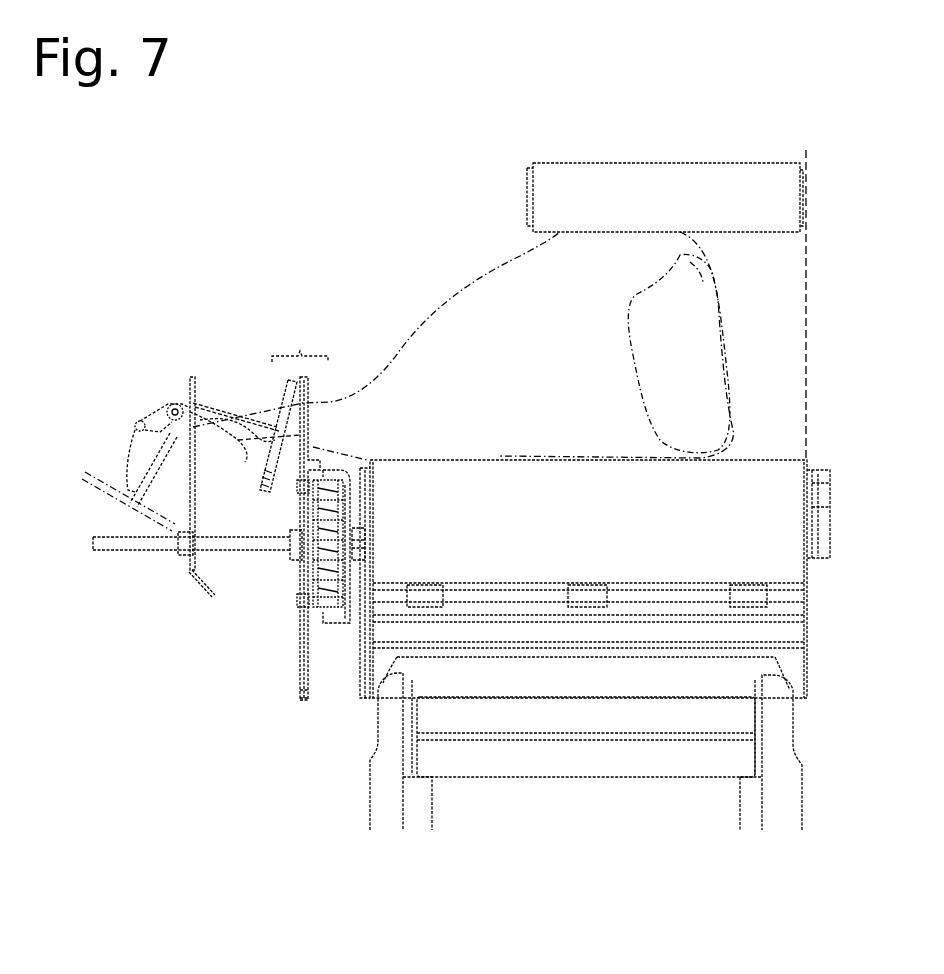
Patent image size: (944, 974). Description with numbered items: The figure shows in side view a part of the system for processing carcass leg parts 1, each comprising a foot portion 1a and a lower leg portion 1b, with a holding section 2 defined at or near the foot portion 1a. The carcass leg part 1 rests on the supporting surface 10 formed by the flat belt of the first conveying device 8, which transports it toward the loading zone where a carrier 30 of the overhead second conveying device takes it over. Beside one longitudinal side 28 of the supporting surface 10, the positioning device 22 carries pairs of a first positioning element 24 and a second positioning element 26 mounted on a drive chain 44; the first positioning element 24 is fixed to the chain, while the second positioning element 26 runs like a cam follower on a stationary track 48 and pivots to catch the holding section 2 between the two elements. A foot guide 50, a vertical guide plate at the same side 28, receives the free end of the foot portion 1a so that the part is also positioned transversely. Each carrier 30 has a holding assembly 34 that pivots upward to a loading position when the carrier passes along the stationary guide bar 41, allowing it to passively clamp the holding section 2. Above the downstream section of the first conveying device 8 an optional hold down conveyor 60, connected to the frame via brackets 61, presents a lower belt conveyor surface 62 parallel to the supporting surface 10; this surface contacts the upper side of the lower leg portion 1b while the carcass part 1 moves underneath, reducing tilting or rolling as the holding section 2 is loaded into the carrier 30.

The carcass leg part 1 is at (440, 305).
The foot portion 1a is at (233, 400).
The lower leg portion 1b is at (735, 317).
The holding section 2 is at (300, 343).
The first conveying device 8 is at (595, 790).
The supporting surface 10 is at (768, 455).
The positioning device 22 is at (290, 640).
The first positioning element 24 is at (308, 437).
The second positioning element 26 is at (308, 690).
The longitudinal side 28 is at (352, 693).
The carrier 30 is at (250, 490).
The holding assembly 34 is at (272, 414).
The guide bar 41 is at (135, 425).
The drive chain 44 is at (323, 580).
The stationary track 48 is at (307, 507).
The foot guide 50 is at (185, 382).
The hold down conveyor 60 is at (745, 160).
The bracket 61 is at (808, 419).
The lower belt conveyor surface 62 is at (765, 235).